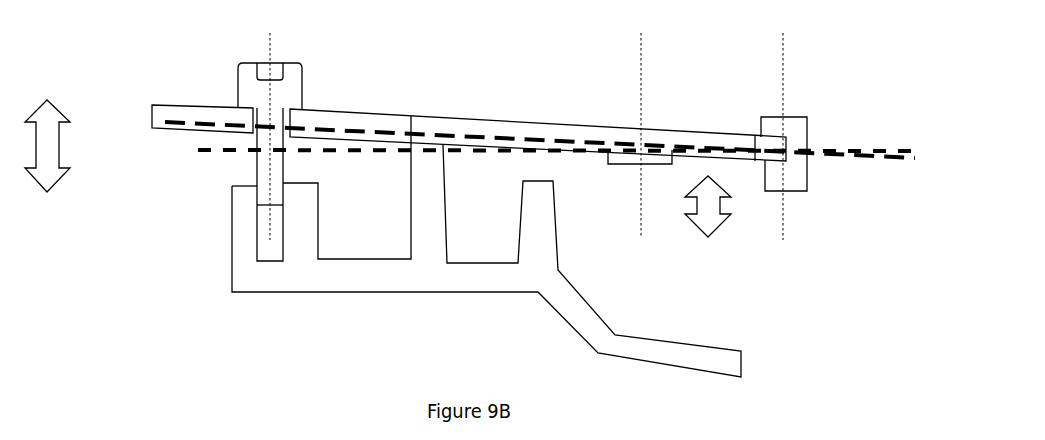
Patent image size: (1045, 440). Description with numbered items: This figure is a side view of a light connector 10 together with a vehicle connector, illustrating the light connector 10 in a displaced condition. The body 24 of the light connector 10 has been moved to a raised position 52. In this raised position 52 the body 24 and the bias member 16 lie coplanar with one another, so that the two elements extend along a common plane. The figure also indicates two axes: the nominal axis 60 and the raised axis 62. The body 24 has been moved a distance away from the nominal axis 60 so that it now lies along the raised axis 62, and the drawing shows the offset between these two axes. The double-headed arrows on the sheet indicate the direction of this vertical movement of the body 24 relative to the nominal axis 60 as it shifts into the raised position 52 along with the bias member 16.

The light connector 10 is at (157, 103).
The bias member 16 is at (538, 109).
The body 24 is at (334, 113).
The raised position 52 is at (80, 238).
The nominal axis 60 is at (205, 157).
The raised axis 62 is at (187, 121).